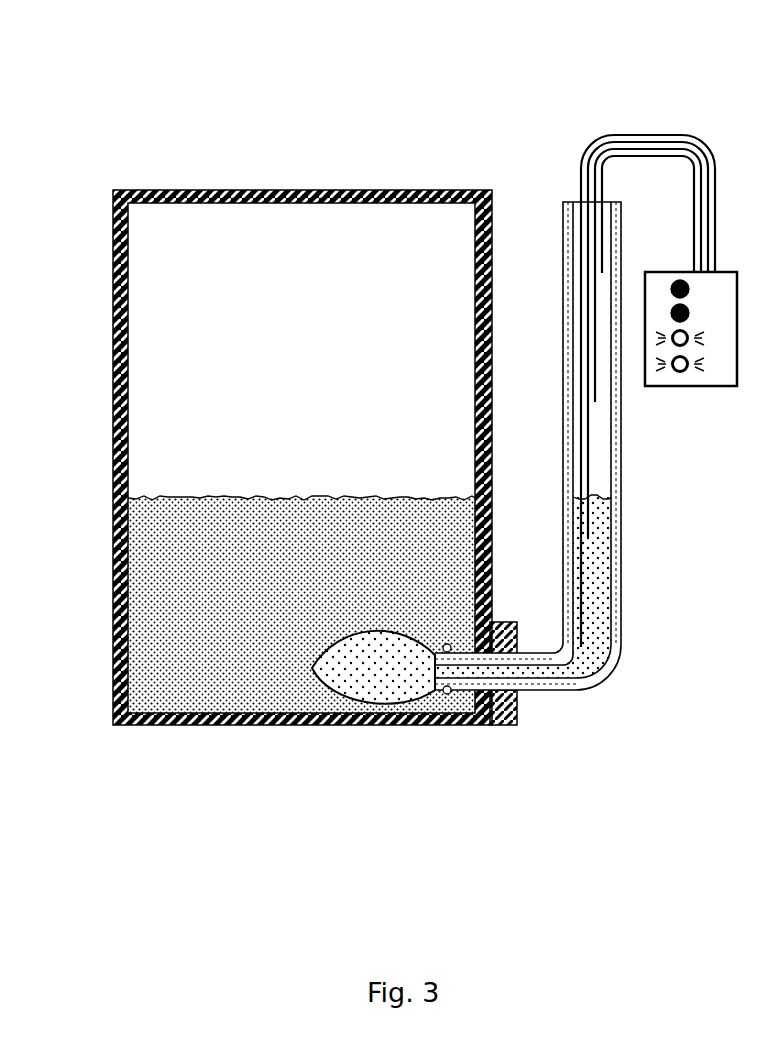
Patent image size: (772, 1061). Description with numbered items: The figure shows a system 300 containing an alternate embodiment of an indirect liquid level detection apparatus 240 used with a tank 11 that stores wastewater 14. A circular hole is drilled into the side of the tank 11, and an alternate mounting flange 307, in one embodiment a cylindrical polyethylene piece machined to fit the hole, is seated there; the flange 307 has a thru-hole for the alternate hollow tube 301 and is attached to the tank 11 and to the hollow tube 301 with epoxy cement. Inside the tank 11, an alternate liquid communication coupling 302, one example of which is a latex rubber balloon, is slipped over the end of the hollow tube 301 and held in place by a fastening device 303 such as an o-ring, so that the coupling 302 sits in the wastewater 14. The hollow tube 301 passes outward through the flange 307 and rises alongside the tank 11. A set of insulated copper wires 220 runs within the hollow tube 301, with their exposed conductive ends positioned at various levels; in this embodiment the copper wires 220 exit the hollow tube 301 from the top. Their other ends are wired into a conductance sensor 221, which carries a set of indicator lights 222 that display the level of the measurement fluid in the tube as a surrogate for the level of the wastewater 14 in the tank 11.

The tank 11 is at (105, 259).
The wastewater 14 is at (160, 555).
The system 300 is at (696, 100).
The insulated copper wires 220 is at (595, 148).
The conductance sensor 221 is at (712, 387).
The indicator lights 222 is at (684, 396).
The alternate hollow tube 301 is at (620, 585).
The indirect liquid level detection apparatus 240 is at (630, 650).
The liquid communication coupling 302 is at (315, 700).
The fastening device 303 is at (432, 700).
The mounting flange 307 is at (505, 722).